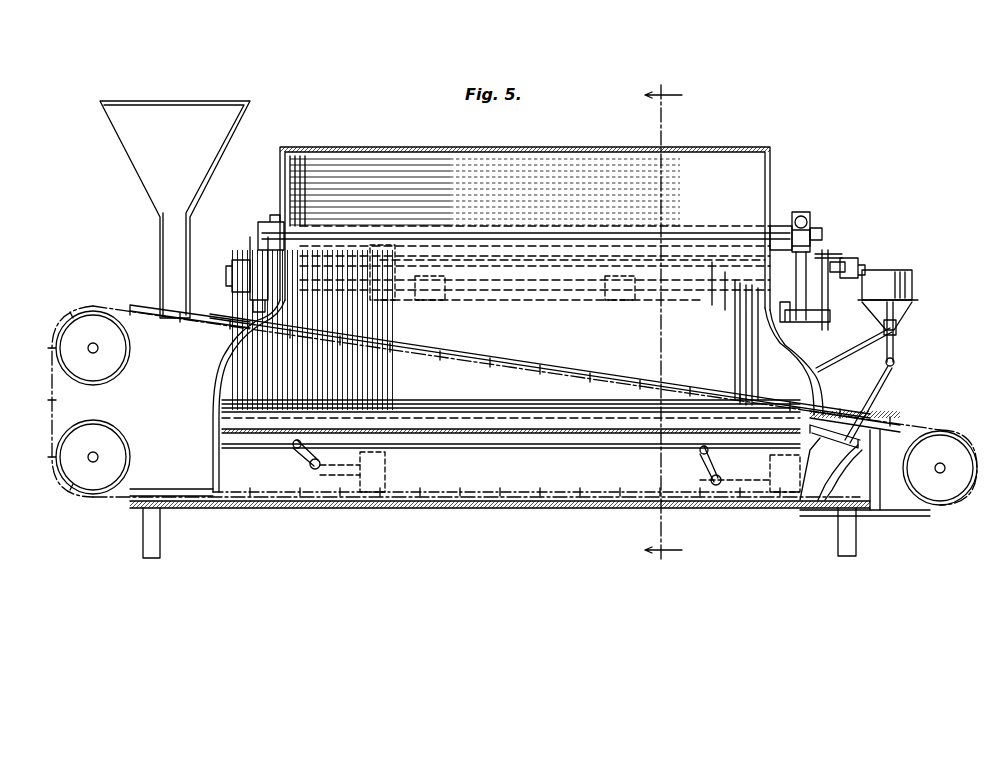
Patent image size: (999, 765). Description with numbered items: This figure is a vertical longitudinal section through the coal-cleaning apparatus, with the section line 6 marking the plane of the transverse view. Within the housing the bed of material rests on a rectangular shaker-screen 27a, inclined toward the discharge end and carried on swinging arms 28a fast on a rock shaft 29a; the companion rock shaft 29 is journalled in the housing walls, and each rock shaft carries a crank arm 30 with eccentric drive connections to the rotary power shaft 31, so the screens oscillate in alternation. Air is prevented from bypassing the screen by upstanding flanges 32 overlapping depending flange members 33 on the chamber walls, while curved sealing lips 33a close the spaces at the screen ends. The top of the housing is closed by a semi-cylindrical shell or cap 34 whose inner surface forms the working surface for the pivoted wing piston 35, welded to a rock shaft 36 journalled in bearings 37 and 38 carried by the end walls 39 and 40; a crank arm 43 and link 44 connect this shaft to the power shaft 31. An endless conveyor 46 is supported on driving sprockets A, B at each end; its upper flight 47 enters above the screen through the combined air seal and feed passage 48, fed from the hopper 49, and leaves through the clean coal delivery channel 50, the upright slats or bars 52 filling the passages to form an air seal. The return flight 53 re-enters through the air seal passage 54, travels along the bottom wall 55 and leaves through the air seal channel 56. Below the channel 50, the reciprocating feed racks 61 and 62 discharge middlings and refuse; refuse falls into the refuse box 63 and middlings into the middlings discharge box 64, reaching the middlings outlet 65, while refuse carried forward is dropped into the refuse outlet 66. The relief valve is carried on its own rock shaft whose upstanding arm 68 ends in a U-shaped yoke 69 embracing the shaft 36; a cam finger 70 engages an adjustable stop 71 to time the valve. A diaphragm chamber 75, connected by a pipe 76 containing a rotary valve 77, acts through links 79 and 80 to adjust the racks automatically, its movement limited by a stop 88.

The section line 6- 6 is at (663, 325).
The shaker-screen 27a is at (440, 458).
The swinging arms 28a is at (294, 456).
The rock shaft 29 is at (716, 486).
The rock shaft 29a is at (310, 470).
The crank arm 30 is at (560, 474).
The rotary power shaft 31 is at (718, 278).
The upstanding flanges 32 is at (447, 419).
The depending flange members 33 is at (502, 417).
The curved sealing lips 33a is at (222, 408).
The semi-cylindrical shell or cap 34 is at (700, 150).
The wing piston 35 is at (580, 160).
The rock shaft 36 is at (242, 230).
The bearing 37 is at (270, 222).
The bearing 38 is at (778, 225).
The end wall 39 is at (232, 342).
The end wall 40 is at (823, 382).
The crank arm 43 is at (250, 254).
The link 44 is at (234, 270).
The conveyor 46 is at (50, 406).
The upper flight 47 is at (569, 379).
The combined air seal and feed passage 48 is at (173, 328).
The hopper 49 is at (150, 182).
The clean coal delivery channel 50 is at (892, 409).
The slats or bars 52 is at (505, 366).
The return flight 53 is at (527, 499).
The air seal passage 54 is at (914, 516).
The bottom wall 55 is at (530, 506).
The air seal channel 56 is at (176, 498).
The feed rack for middlings 61 is at (862, 402).
The feed rack for refuse 62 is at (842, 448).
The refuse box 63 is at (810, 512).
The middlings discharge box 64 is at (878, 516).
The middlings outlet 65 is at (853, 553).
The refuse outlet 66 is at (162, 535).
The upstanding arm 68 is at (806, 290).
The U-shaped yoke 69 is at (820, 230).
The cam finger 70 is at (811, 214).
The adjustable stop 71 is at (806, 214).
The diaphragm chamber 75 is at (912, 277).
The pipe 76 is at (843, 254).
The rotary valve 77 is at (858, 264).
The link 79 is at (893, 343).
The link 80 is at (882, 358).
The stop 88 is at (896, 306).
The driving sprocket A is at (94, 441).
The driving sprocket B is at (963, 437).